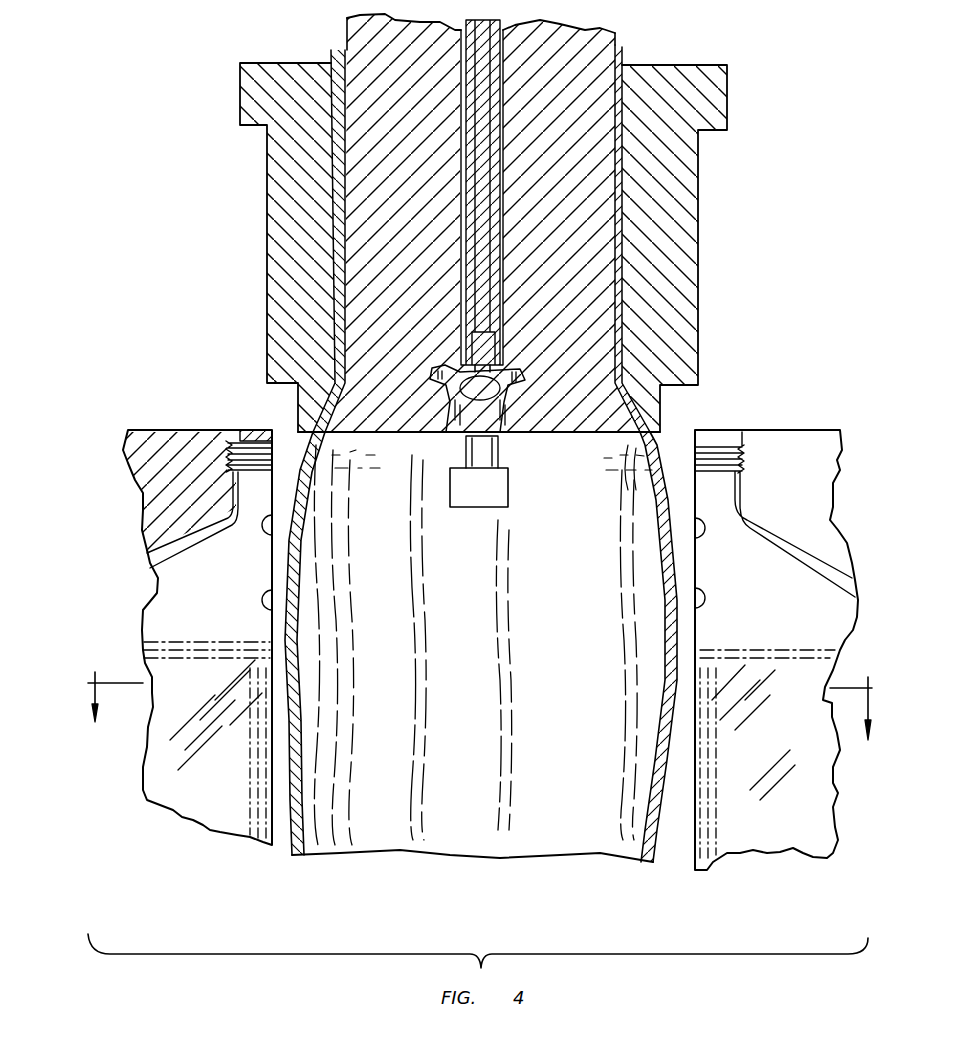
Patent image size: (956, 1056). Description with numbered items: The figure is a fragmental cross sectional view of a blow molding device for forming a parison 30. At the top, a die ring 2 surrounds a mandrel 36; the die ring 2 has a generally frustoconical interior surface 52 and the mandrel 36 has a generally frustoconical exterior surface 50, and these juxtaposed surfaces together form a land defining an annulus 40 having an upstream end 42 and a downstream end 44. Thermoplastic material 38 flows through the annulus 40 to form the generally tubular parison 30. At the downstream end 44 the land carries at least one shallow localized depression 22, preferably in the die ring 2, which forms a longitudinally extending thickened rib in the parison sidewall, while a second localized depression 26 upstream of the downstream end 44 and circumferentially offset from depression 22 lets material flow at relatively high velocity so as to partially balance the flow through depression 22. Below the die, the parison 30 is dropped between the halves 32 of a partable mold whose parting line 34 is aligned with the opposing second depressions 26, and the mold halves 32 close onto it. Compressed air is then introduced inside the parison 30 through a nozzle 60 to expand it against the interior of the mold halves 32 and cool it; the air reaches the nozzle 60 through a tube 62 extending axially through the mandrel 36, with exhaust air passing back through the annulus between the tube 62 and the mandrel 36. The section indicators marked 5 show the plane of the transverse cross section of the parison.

The die ring 2 is at (700, 212).
The section line 5- 5 is at (480, 722).
The localized depression 22 is at (308, 428).
The second depression 26 is at (478, 432).
The parison 30 is at (652, 860).
The mold halves 32 is at (213, 813).
The parting line 34 is at (277, 837).
The mandrel 36 is at (562, 243).
The thermoplastic material 38 is at (299, 706).
The annulus 40 is at (630, 410).
The upstream end 42 is at (627, 392).
The downstream end 44 is at (627, 471).
The frustoconical exterior surface 50 is at (345, 433).
The frustoconical interior surface 52 is at (333, 380).
The nozzle 60 is at (497, 486).
The tube 62 is at (500, 44).